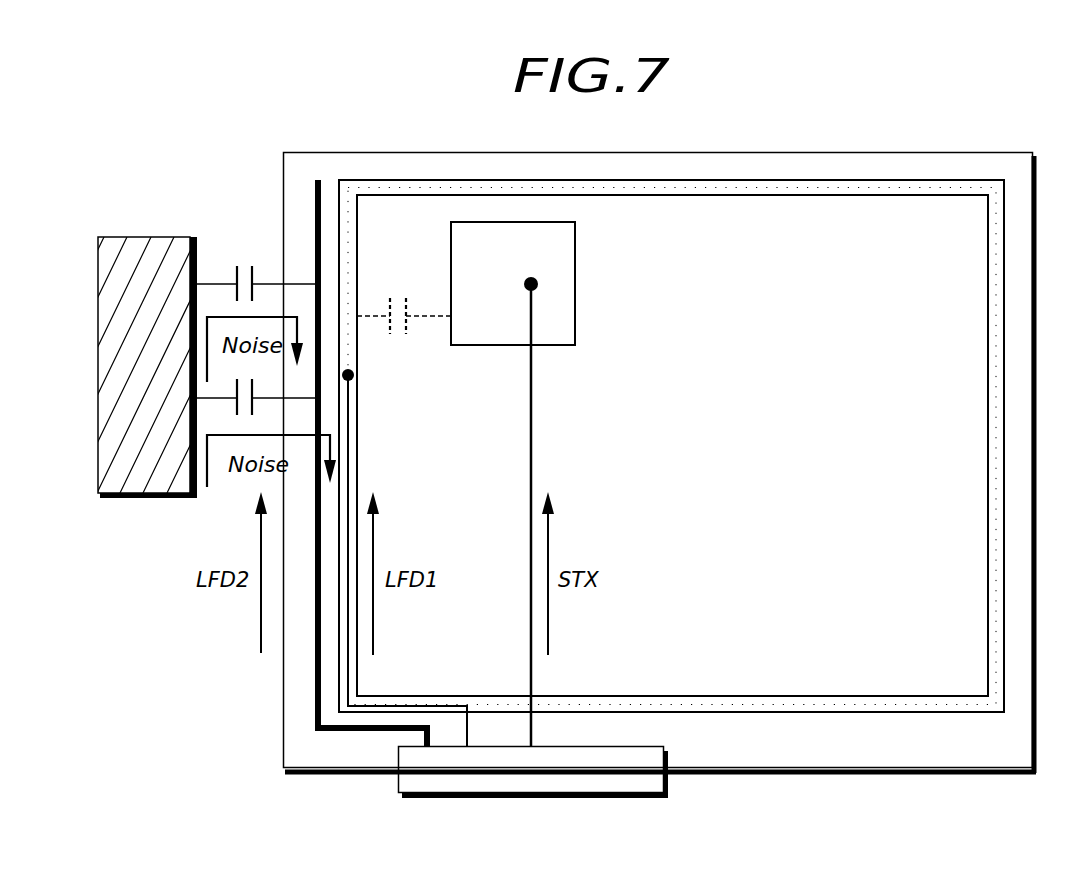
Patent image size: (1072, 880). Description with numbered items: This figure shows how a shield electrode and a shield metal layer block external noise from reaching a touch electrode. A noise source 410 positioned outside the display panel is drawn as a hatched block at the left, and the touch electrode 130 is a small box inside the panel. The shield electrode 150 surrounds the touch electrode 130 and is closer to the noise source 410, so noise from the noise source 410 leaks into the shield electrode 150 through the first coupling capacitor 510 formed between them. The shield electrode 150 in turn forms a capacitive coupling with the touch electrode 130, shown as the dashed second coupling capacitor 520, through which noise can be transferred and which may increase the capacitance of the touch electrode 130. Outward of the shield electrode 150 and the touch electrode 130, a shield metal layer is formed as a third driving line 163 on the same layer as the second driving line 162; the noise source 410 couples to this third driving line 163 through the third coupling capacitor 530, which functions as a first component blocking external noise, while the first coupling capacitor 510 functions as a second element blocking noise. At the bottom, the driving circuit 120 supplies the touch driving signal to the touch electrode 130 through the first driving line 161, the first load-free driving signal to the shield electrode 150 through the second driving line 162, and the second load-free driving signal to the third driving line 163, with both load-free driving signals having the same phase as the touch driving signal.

The driving circuit 120 is at (650, 797).
The touch electrode 130 is at (535, 222).
The shield electrode 150 is at (846, 190).
The first driving line 161 is at (531, 643).
The second driving line 162 is at (348, 678).
The third driving line 163 is at (315, 653).
The noise source 410 is at (152, 237).
The first coupling capacitor 510 is at (240, 257).
The second coupling capacitor 520 is at (396, 285).
The third coupling capacitor 530 is at (244, 406).